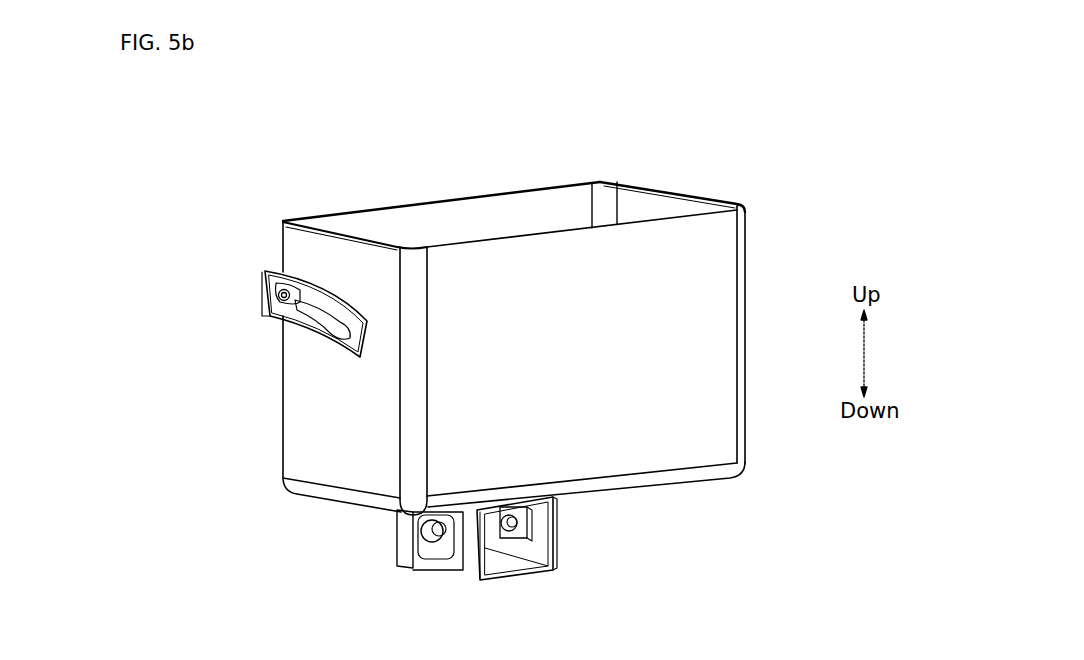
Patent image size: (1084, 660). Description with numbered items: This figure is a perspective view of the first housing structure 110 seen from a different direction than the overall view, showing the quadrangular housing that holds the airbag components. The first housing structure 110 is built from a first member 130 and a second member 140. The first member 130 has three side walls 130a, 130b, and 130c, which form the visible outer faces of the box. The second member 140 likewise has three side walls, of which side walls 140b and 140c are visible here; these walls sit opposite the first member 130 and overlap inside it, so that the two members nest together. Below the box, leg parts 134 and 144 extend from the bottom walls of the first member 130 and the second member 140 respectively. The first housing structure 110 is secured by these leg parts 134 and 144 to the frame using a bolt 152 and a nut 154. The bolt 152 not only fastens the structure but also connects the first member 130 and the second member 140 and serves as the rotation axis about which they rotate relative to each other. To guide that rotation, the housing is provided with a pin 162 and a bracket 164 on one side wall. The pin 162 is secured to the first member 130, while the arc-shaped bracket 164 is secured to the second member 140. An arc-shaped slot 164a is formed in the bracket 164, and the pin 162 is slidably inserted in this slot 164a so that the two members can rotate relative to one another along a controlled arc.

The first housing structure 110 is at (673, 128).
The first member 130 is at (520, 330).
The side wall 130a is at (321, 403).
The side wall 130b is at (722, 322).
The side wall 130c is at (741, 203).
The leg part 134 is at (458, 557).
The second member 140 is at (514, 171).
The side wall 140b is at (500, 212).
The side wall 140c is at (680, 207).
The leg part 144 is at (403, 541).
The bolt 152 is at (419, 531).
The nut 154 is at (527, 530).
The pin 162 is at (277, 297).
The bracket 164 is at (291, 269).
The arc-shaped slot 164a is at (316, 285).